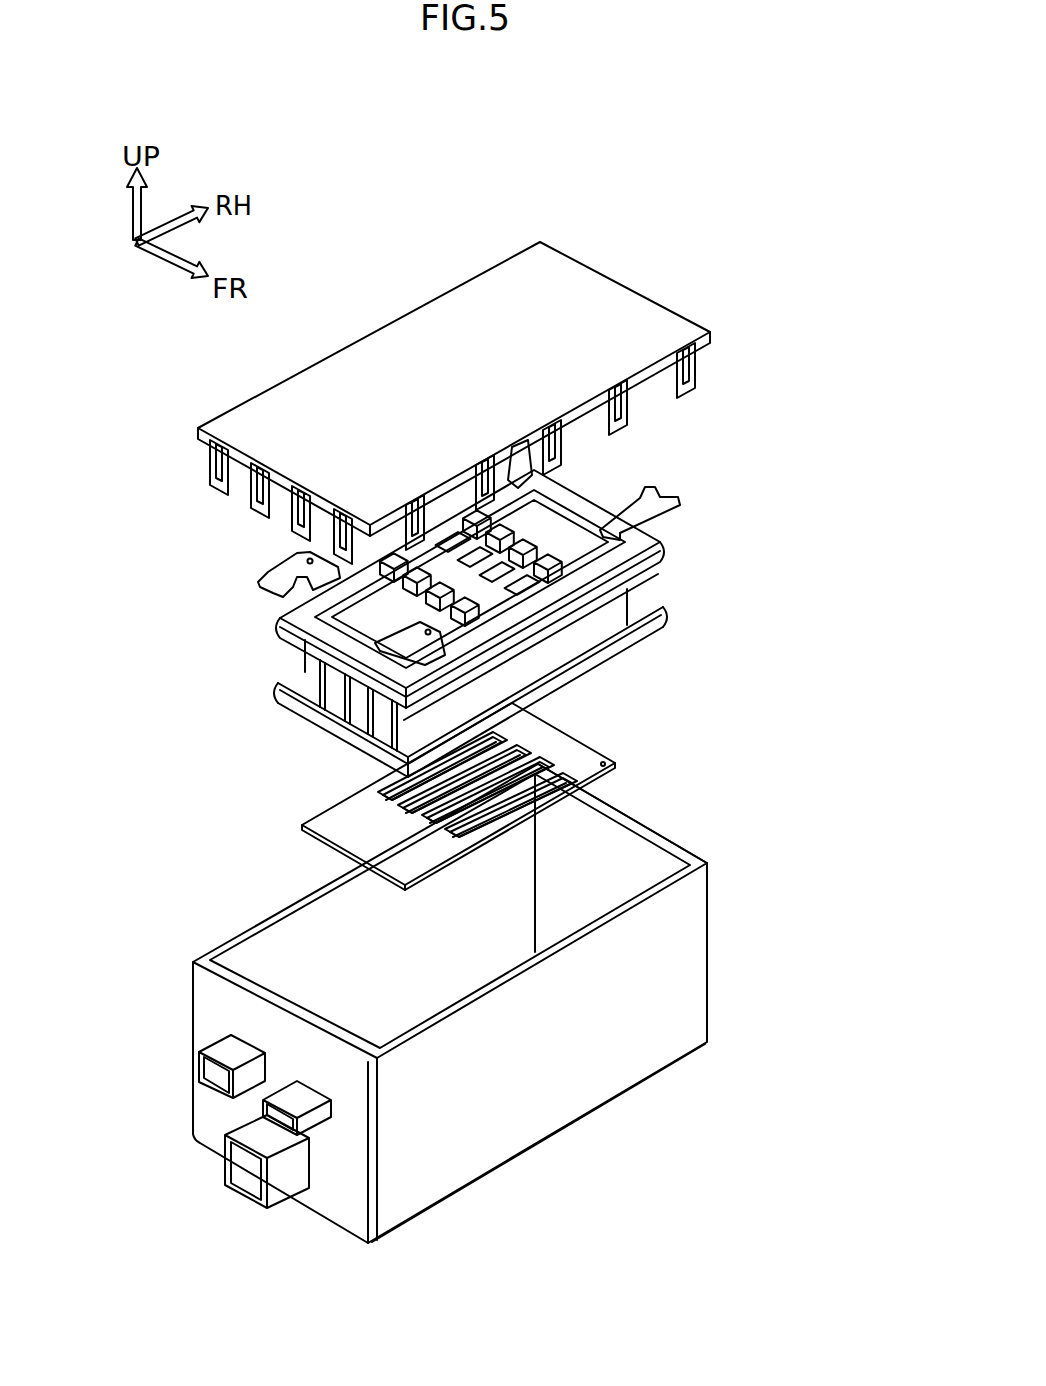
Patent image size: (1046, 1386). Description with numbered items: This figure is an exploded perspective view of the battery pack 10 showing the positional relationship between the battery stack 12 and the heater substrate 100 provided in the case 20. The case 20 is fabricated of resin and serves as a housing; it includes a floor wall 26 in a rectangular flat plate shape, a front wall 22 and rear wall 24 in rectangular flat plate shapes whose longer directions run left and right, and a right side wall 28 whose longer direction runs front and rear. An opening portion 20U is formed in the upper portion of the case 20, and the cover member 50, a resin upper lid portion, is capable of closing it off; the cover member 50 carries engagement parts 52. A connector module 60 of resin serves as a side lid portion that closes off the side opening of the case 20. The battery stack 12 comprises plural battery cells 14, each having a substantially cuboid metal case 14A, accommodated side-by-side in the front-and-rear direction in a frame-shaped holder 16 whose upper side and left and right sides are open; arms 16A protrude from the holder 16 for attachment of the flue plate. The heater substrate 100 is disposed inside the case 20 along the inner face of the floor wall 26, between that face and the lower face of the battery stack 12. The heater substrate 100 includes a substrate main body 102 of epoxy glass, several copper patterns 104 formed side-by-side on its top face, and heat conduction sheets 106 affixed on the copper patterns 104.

The battery pack 10 is at (675, 227).
The battery stack 12 is at (474, 580).
The battery cell 14 is at (578, 531).
The case 14A is at (330, 690).
The holder 16 is at (664, 615).
The arm 16A is at (518, 465).
The case 20 is at (447, 1015).
The opening portion 20U is at (227, 953).
The front wall 22 is at (640, 1045).
The rear wall 24 is at (292, 928).
The floor wall 26 is at (600, 1110).
The right side wall 28 is at (630, 855).
The cover member 50 is at (453, 368).
The engagement hooks 52 is at (700, 385).
The connector module 60 is at (333, 1192).
The heater substrate 100 is at (488, 809).
The substrate main body 102 is at (402, 860).
The copper pattern 104 is at (447, 842).
The heat conduction sheet 106 is at (543, 790).